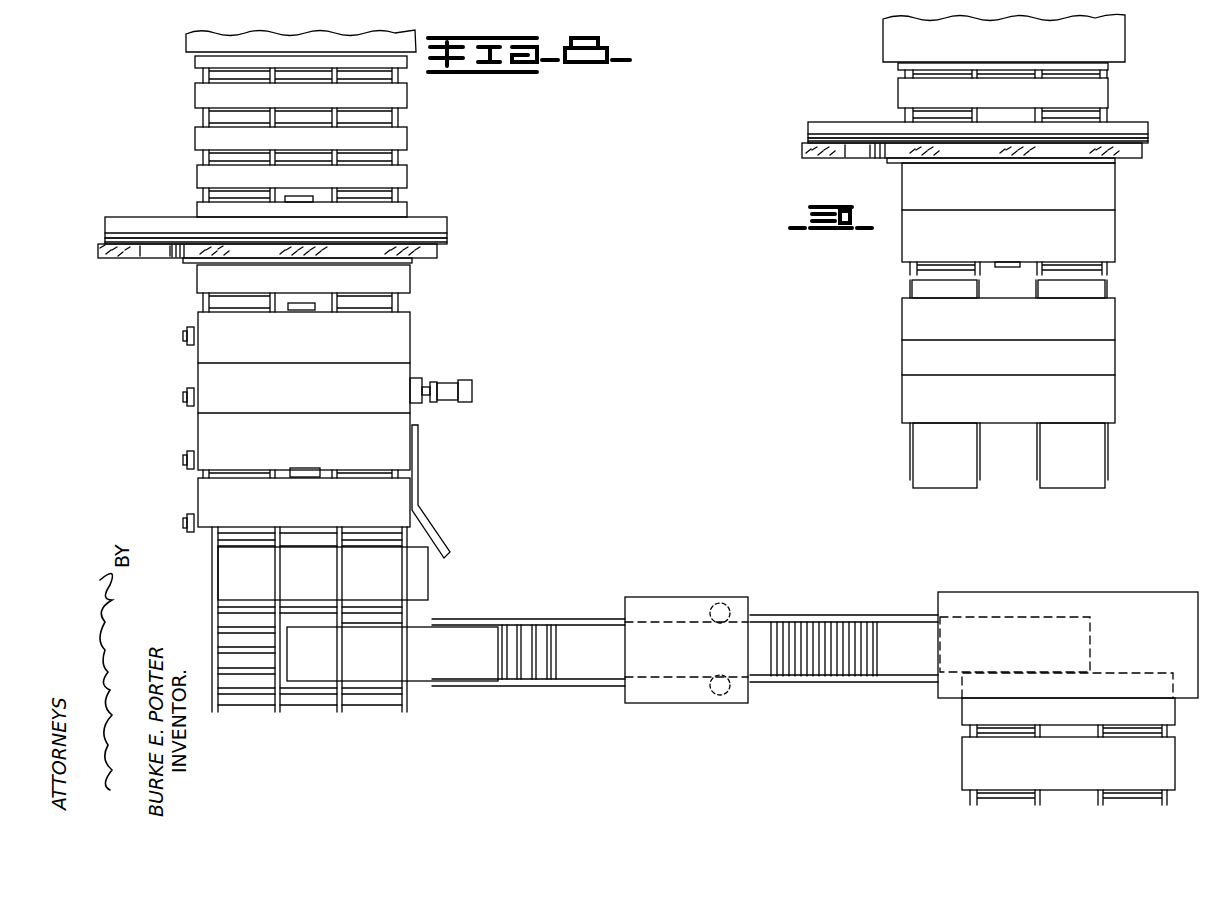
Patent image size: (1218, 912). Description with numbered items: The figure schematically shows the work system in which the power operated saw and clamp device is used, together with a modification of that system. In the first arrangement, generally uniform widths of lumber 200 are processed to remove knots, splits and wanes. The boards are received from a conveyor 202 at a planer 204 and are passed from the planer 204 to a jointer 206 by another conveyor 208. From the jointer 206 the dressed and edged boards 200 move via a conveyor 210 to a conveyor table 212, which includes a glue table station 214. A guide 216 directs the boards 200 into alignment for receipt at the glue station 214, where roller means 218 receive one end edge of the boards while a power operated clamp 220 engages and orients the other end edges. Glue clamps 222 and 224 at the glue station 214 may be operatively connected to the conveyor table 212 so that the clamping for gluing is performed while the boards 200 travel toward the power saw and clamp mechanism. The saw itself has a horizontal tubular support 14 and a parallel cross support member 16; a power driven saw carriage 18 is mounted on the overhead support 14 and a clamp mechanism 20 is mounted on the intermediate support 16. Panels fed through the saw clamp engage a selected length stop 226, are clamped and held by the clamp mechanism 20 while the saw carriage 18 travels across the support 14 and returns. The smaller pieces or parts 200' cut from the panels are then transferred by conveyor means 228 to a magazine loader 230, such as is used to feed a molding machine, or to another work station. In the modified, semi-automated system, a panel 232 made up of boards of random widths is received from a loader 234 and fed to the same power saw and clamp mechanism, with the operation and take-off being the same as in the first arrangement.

In FIG. 8, the horizontal tubular support 14 is at (160, 220).
In FIG. 9, the horizontal tubular support 14 is at (875, 125).
In FIG. 8, the cross support member 16 is at (120, 255).
In FIG. 9, the cross support member 16 is at (1138, 145).
In FIG. 8, the power driven saw carriage 18 is at (165, 258).
In FIG. 9, the power driven saw carriage 18 is at (866, 153).
In FIG. 8, the clamp mechanism 20 is at (218, 265).
In FIG. 9, the clamp mechanism 20 is at (938, 163).
In FIG. 8, the lumber 200 is at (685, 639).
In FIG. 8, the smaller pieces or parts 200' is at (339, 157).
In FIG. 9, the smaller pieces or parts 200' is at (1043, 89).
In FIG. 8, the conveyor 202 is at (965, 795).
In FIG. 8, the planer 204 is at (1048, 602).
In FIG. 8, the jointer 206 is at (670, 606).
In FIG. 8, the conveyor 208 is at (820, 616).
In FIG. 8, the conveyor 210 is at (527, 688).
In FIG. 8, the conveyor table 212 is at (337, 683).
In FIG. 8, the glue table station 214 is at (170, 422).
In FIG. 8, the guide 216 is at (432, 530).
In FIG. 8, the roller means 218 is at (185, 395).
In FIG. 8, the power operated clamp 220 is at (445, 383).
In FIG. 8, the glue clamp 222 is at (302, 470).
In FIG. 8, the glue clamp 224 is at (305, 308).
In FIG. 8, the selected length stop 226 is at (308, 196).
In FIG. 8, the conveyor means 228 is at (198, 115).
In FIG. 9, the conveyor means 228 is at (1110, 115).
In FIG. 8, the magazine loader 230 is at (195, 38).
In FIG. 9, the magazine loader 230 is at (1120, 48).
In FIG. 9, the panel 232 is at (1112, 358).
In FIG. 9, the loader 234 is at (1050, 480).